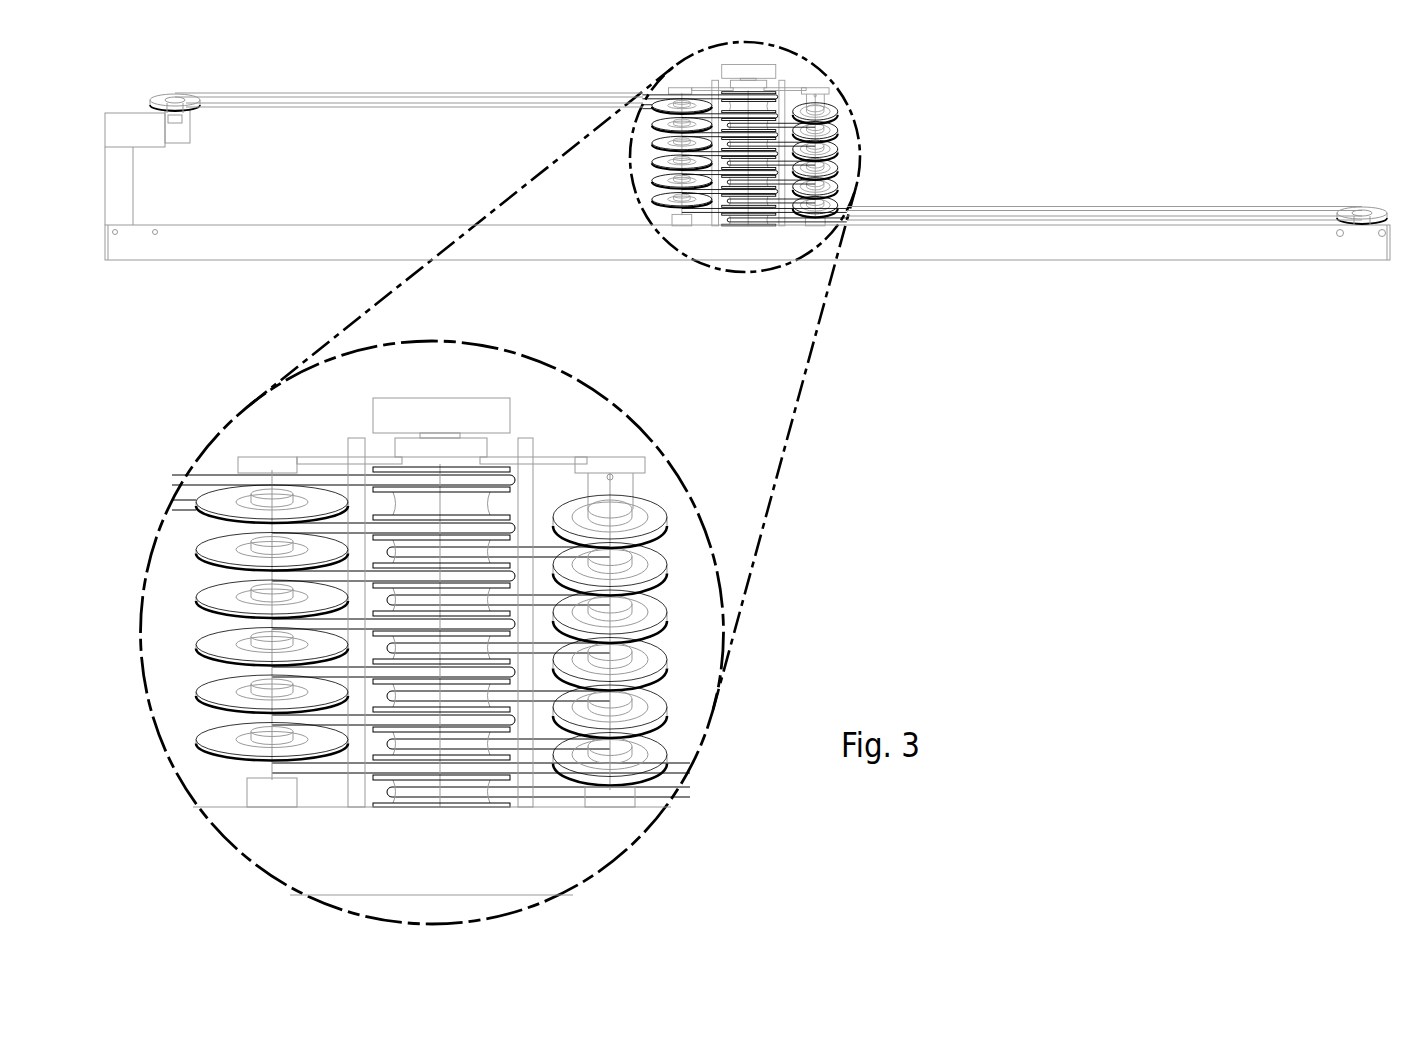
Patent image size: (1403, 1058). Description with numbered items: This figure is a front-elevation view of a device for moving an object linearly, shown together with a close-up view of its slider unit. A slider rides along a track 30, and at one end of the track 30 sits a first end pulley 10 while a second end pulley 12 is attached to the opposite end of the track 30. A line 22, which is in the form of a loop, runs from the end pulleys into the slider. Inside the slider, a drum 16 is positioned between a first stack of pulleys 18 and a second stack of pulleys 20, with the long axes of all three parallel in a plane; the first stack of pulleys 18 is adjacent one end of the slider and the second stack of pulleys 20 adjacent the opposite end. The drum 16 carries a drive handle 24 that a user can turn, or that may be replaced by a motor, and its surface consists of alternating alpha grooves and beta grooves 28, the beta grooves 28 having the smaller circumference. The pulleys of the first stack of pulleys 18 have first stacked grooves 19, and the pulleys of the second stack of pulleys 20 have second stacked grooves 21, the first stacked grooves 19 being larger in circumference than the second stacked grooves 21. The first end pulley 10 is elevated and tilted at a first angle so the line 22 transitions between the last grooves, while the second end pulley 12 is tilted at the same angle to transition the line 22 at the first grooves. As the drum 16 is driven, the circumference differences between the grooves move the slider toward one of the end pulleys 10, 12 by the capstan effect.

The first end pulley 10 is at (174, 94).
The second end pulley 12 is at (1364, 207).
The drum 16 is at (443, 808).
The first stack of pulleys 18 is at (232, 498).
The first stacked grooves 19 is at (325, 758).
The second stack of pulleys 20 is at (655, 515).
The second stacked grooves 21 is at (565, 781).
The line 22 is at (388, 96).
The drive handle 24 is at (500, 412).
The beta grooves 28 is at (483, 505).
The track 30 is at (323, 242).